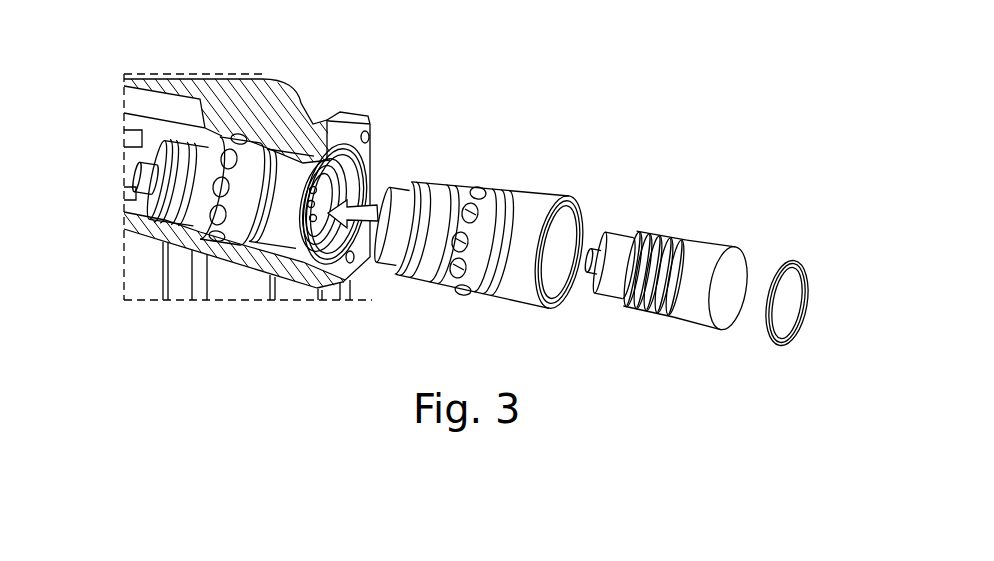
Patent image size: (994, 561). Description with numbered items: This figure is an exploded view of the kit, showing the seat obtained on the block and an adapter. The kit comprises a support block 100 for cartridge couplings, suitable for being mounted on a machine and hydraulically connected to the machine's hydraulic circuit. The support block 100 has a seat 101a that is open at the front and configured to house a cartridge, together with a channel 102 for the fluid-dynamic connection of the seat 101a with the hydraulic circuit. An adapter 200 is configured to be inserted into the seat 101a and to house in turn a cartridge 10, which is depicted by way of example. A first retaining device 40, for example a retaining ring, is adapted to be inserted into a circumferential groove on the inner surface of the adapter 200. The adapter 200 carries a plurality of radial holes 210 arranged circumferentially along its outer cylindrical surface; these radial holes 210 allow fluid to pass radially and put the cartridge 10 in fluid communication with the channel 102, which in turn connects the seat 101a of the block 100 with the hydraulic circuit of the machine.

The support block 100 is at (296, 78).
The channel 102 is at (223, 116).
The seat 101a is at (358, 173).
The adapter 200 is at (495, 246).
The radial holes 210 is at (477, 288).
The cartridge 10 is at (733, 229).
The first retaining device 40 is at (814, 256).